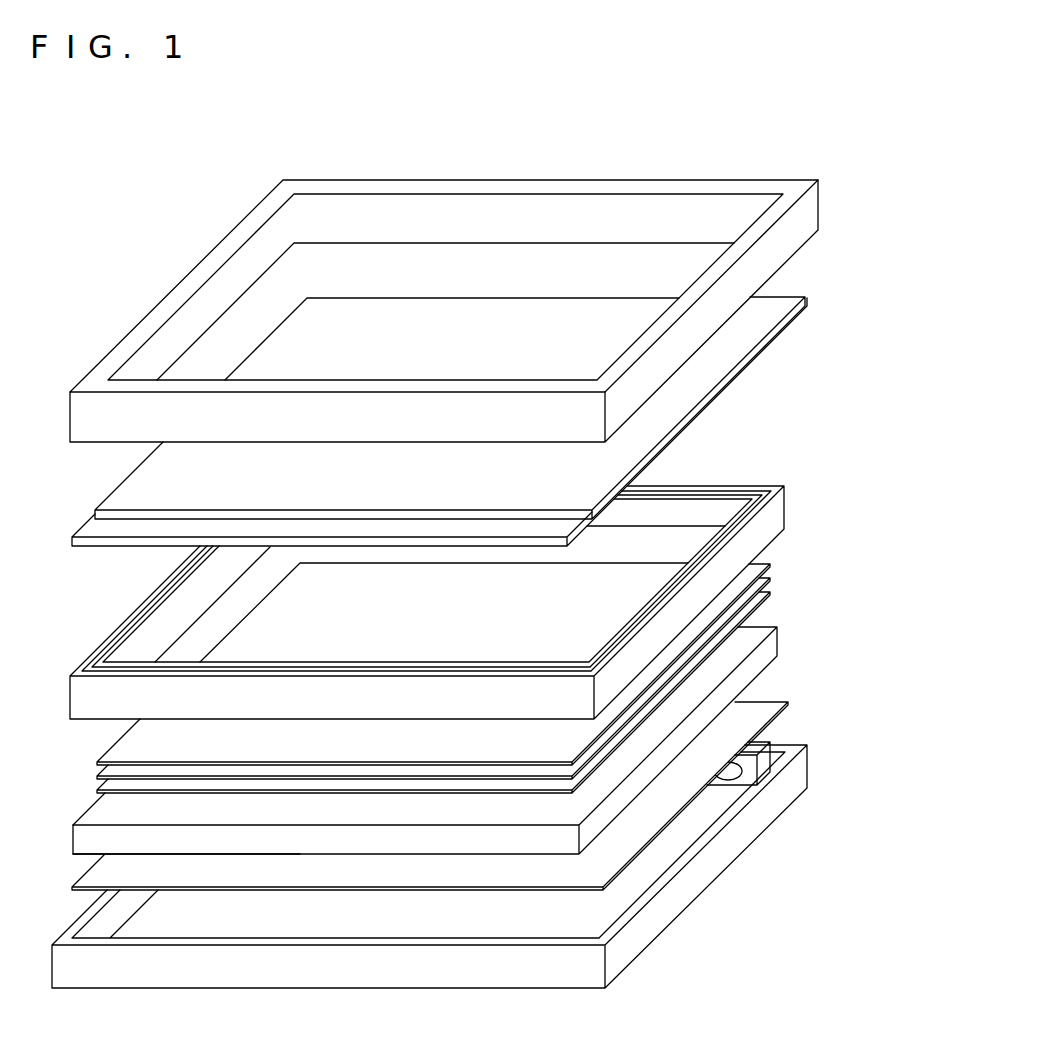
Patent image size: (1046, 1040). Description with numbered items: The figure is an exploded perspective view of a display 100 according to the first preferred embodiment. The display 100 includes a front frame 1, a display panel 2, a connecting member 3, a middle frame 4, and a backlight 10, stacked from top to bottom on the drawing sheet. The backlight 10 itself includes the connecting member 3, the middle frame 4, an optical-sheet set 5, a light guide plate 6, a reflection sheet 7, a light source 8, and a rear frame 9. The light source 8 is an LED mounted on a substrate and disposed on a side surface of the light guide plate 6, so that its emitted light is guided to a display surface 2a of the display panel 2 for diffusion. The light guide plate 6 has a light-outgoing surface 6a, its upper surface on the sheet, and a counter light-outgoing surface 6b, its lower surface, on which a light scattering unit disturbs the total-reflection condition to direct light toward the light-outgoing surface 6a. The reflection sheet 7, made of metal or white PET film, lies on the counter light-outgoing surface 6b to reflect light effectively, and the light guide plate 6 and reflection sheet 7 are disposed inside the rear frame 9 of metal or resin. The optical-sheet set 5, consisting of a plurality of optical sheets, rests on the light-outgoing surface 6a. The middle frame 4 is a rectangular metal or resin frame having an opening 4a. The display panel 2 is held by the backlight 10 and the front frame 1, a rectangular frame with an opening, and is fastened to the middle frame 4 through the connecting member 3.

The display 100 is at (226, 113).
The front frame 1 is at (803, 215).
The display panel 2 is at (780, 305).
The display surface 2a is at (510, 328).
The connecting member 3 is at (770, 486).
The middle frame 4 is at (777, 510).
The opening 4a is at (682, 508).
The optical-sheet set 5 is at (781, 558).
The light guide plate 6 is at (752, 634).
The light-outgoing surface 6a is at (112, 812).
The counter light-outgoing surface 6b is at (85, 857).
The reflection sheet 7 is at (752, 712).
The light source 8 is at (760, 775).
The rear frame 9 is at (742, 828).
The backlight 10 is at (858, 473).